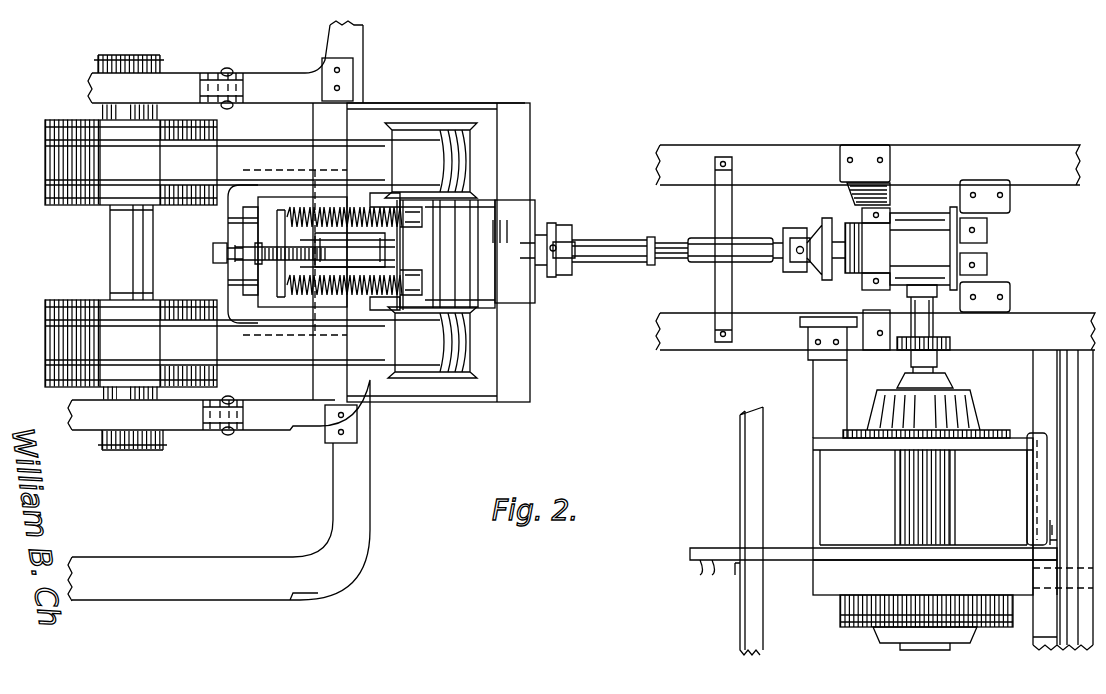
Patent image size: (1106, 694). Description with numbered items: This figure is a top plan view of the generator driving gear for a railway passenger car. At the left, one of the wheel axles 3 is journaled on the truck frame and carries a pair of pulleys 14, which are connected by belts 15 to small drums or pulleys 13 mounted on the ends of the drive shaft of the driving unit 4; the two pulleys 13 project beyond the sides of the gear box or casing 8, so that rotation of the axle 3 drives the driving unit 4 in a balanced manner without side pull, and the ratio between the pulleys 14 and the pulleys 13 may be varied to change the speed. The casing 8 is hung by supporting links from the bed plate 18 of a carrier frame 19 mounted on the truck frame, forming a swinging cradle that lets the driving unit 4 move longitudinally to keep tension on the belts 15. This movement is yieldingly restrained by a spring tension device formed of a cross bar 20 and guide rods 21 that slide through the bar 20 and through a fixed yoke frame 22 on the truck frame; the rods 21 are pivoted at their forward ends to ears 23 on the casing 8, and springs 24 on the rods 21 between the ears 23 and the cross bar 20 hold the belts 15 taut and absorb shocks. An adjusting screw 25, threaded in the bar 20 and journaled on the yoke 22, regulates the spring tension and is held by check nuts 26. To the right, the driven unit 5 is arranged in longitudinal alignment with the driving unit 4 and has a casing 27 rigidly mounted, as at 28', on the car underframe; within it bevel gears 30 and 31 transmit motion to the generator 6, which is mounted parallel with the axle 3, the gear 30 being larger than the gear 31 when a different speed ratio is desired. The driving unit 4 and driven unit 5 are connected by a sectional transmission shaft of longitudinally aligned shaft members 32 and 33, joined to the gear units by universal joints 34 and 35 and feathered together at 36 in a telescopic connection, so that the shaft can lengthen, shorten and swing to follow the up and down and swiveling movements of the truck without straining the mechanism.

The wheel axle 3 is at (150, 231).
The driving unit 4 is at (428, 216).
The driven unit 5 is at (912, 215).
The generator 6 is at (985, 465).
The gear box or casing 8 is at (460, 278).
The small drums or pulleys 13 is at (410, 123).
The pulleys on the axle 14 is at (66, 198).
The belts 15 is at (292, 128).
The bed plate 18 is at (518, 305).
The carrier frame 19 is at (474, 103).
The cross bar 20 is at (265, 224).
The guide rods 21 is at (275, 210).
The fixed yoke frame 22 is at (258, 195).
The ears 23 is at (410, 235).
The springs 24 is at (358, 207).
The adjusting screw 25 is at (318, 253).
The check nuts 26 is at (242, 262).
The casing 27 is at (901, 248).
The mounting 28' is at (846, 236).
The bevel gear 30 is at (948, 331).
The bevel gear 31 is at (908, 370).
The shaft member 32 is at (608, 242).
The shaft member 33 is at (753, 242).
The universal joint 34 is at (562, 238).
The universal joint 35 is at (790, 272).
The feathered telescopic connection 36 is at (665, 243).